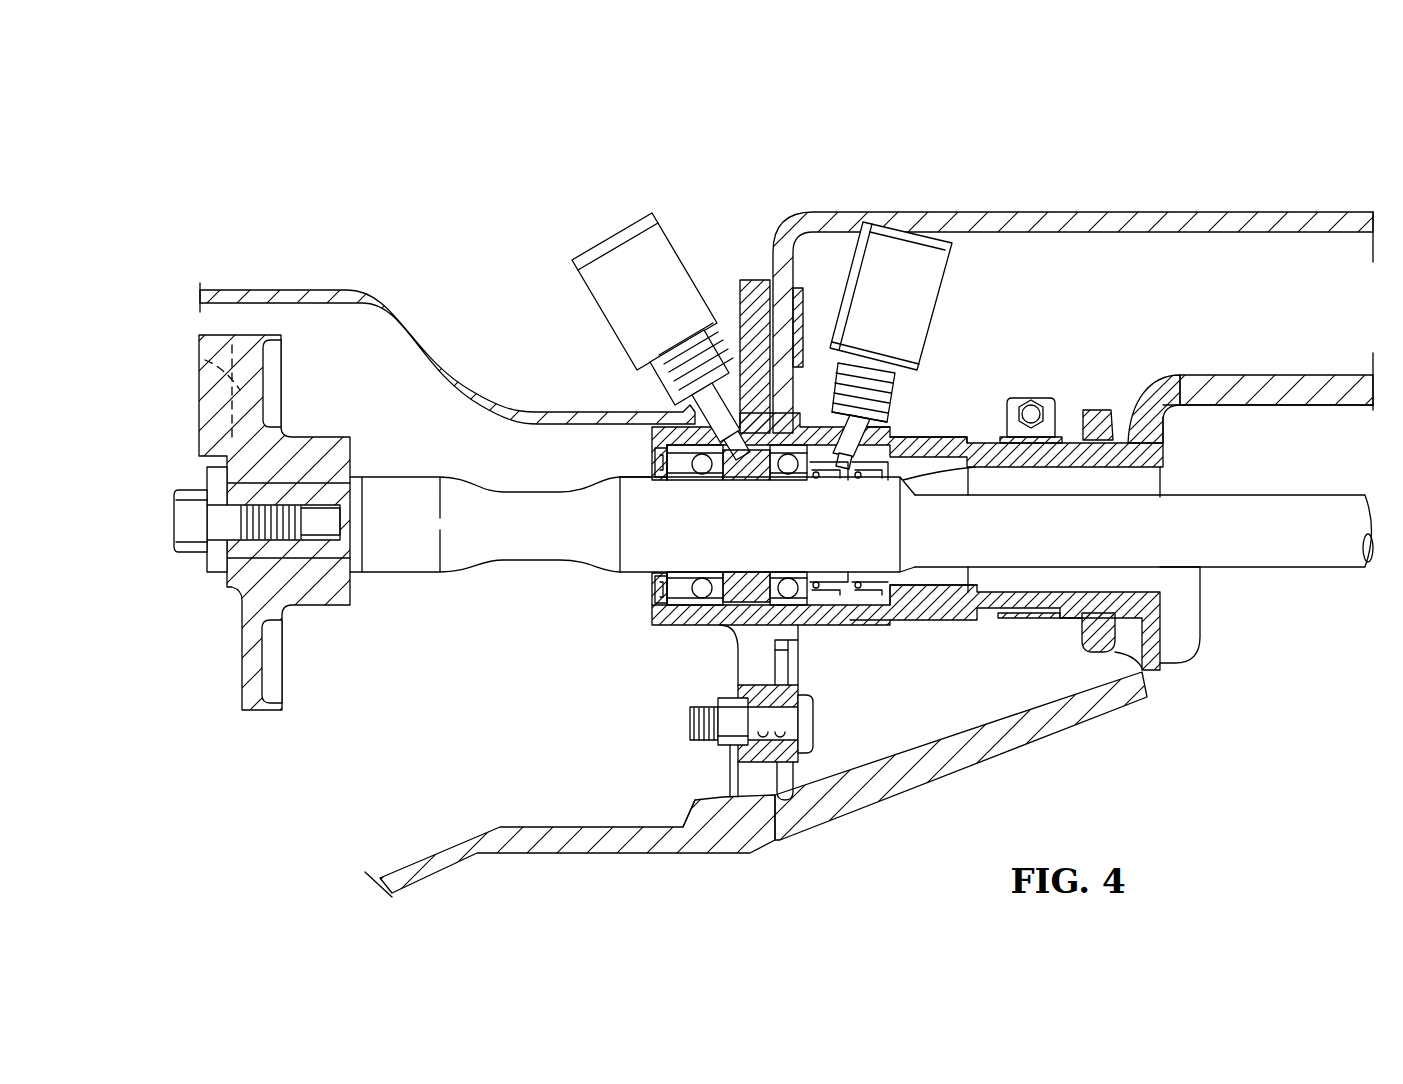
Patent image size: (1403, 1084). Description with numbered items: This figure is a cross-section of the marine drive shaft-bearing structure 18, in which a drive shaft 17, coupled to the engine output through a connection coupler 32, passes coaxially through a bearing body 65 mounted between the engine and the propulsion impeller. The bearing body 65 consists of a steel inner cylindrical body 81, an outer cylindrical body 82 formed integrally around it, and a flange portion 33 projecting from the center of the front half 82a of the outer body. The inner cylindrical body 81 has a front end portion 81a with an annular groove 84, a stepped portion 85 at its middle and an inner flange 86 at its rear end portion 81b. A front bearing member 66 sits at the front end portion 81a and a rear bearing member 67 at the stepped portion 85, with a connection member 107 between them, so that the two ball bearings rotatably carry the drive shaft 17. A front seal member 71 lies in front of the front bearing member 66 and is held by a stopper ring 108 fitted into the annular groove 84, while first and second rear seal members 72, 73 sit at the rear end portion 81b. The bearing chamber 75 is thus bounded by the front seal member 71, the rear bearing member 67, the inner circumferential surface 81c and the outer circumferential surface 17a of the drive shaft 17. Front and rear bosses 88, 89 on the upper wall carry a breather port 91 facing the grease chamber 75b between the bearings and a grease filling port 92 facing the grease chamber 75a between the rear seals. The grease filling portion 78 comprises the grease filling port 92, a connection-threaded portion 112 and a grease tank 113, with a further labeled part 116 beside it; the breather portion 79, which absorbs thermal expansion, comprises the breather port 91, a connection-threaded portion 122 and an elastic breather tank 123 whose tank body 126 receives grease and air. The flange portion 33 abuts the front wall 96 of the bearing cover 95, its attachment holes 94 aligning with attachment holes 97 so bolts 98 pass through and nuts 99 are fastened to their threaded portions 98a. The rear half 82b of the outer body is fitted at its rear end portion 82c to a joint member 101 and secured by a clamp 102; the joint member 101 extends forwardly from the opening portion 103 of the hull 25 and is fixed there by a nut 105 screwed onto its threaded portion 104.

The drive shaft 17 is at (860, 480).
The outer circumferential surface of the drive shaft 17a is at (643, 583).
The marine drive shaft-bearing structure 18 is at (487, 147).
The hull 25 is at (1310, 378).
The connection coupler 32 is at (248, 343).
The flange portion 33 is at (764, 290).
The bearing body 65 is at (740, 277).
The front bearing member 66 is at (703, 625).
The rear bearing member 67 is at (792, 640).
The front seal member 71 is at (682, 625).
The first rear seal member 72 is at (800, 700).
The second rear seal member 73 is at (858, 625).
The bearing chamber 75 is at (731, 524).
The grease chamber 75a is at (888, 484).
The grease chamber 75b is at (722, 484).
The grease filling portion 78 is at (1073, 275).
The breather portion 79 is at (602, 324).
The inner cylindrical body 81 is at (897, 440).
The front end portion of the inner cylindrical body 81a is at (652, 615).
The rear end portion of the inner cylindrical body 81b is at (910, 625).
The inner circumferential surface of the inner cylindrical body 81c is at (985, 765).
The outer cylindrical body 82 is at (868, 455).
The front half of the outer cylindrical body 82a is at (716, 630).
The rear half of the outer cylindrical body 82b is at (950, 608).
The rear end portion of the rear half 82c is at (1025, 612).
The annular groove 84 is at (928, 576).
The stepped portion 85 is at (823, 486).
The inner flange 86 is at (968, 480).
The front boss 88 is at (845, 438).
The rear boss 89 is at (872, 410).
The breather port 91 is at (660, 492).
The grease filling port 92 is at (860, 486).
The attachment holes 94 is at (745, 800).
The bearing cover 95 is at (1192, 206).
The front wall 96 is at (800, 320).
The attachment holes 97 is at (790, 800).
The bolts 98 is at (625, 855).
The threaded portions 98a is at (690, 830).
The nuts 99 is at (727, 800).
The joint member 101 is at (1130, 672).
The clamp 102 is at (1047, 410).
The opening portion 103 is at (1218, 487).
The threaded portion 104 is at (1160, 390).
The nut 105 is at (1105, 410).
The connection member 107 is at (757, 484).
The stopper ring 108 is at (643, 470).
The connection-threaded portion 112 is at (885, 380).
The grease tank 113 is at (941, 313).
The sensor cap 116 is at (920, 285).
The connection-threaded portion 122 is at (650, 382).
The breather tank 123 is at (570, 275).
The tank body 126 is at (625, 300).